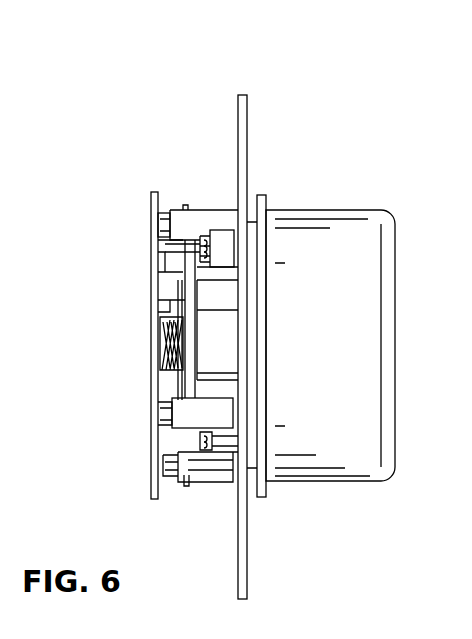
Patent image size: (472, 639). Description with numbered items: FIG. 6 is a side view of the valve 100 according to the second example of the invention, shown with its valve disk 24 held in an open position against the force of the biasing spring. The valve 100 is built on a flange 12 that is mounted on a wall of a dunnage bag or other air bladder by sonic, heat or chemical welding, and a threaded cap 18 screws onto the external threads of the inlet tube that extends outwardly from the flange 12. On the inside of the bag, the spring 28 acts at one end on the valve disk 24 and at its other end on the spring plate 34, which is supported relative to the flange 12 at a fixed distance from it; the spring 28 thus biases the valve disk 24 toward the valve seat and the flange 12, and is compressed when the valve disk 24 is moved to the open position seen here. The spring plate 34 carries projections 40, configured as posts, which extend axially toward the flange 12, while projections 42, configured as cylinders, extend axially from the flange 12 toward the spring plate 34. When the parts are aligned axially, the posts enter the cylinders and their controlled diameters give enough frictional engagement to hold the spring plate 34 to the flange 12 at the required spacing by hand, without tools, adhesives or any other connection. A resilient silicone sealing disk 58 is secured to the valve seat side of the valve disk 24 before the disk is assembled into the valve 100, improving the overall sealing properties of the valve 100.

The valve 100 is at (314, 100).
The flange 12 is at (238, 112).
The cap 18 is at (350, 208).
The valve disk 24 is at (172, 248).
The spring 28 is at (160, 374).
The spring plate 34 is at (151, 295).
The projections 40 is at (172, 212).
The projections 42 is at (210, 483).
The sealing disk 58 is at (230, 277).